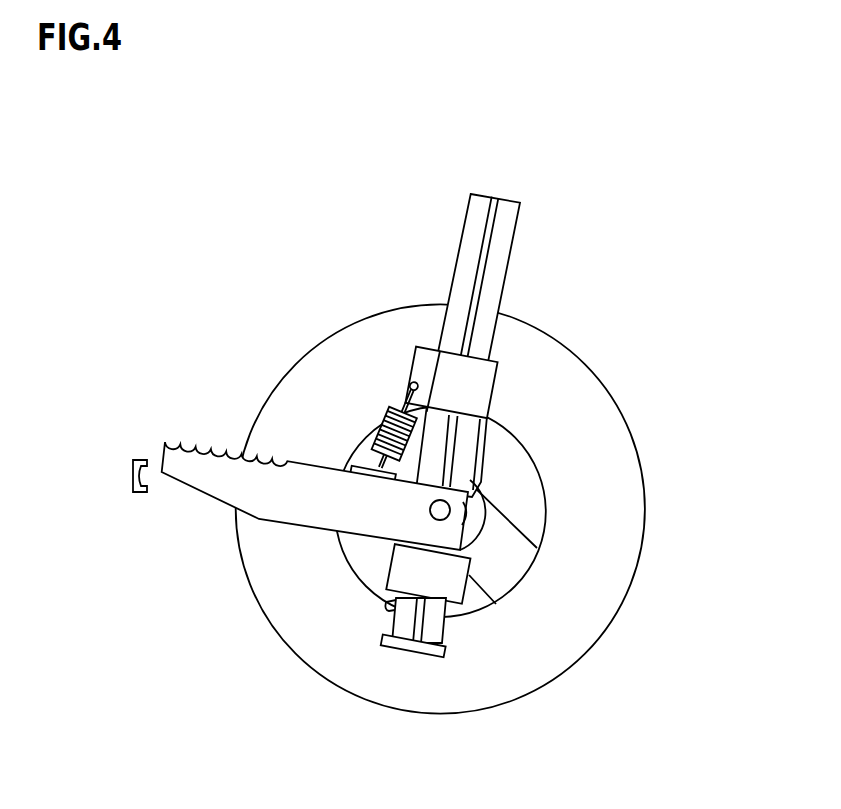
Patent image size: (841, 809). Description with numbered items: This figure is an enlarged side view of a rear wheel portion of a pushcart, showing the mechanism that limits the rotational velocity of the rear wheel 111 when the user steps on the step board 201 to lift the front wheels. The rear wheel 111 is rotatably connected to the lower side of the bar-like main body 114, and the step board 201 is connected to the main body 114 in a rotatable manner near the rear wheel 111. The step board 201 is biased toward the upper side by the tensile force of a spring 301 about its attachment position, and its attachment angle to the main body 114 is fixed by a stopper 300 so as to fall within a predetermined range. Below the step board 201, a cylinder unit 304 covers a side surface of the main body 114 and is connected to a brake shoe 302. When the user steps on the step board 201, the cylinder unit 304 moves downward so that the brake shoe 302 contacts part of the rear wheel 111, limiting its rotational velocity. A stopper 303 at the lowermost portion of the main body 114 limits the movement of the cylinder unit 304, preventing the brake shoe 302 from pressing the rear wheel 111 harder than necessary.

The rear wheel 111 is at (255, 596).
The main body 114 is at (456, 280).
The step board 201 is at (180, 442).
The stopper 300 is at (347, 458).
The spring 301 is at (383, 423).
The brake shoe 302 is at (390, 570).
The stopper 303 is at (392, 647).
The cylinder unit 304 is at (473, 575).